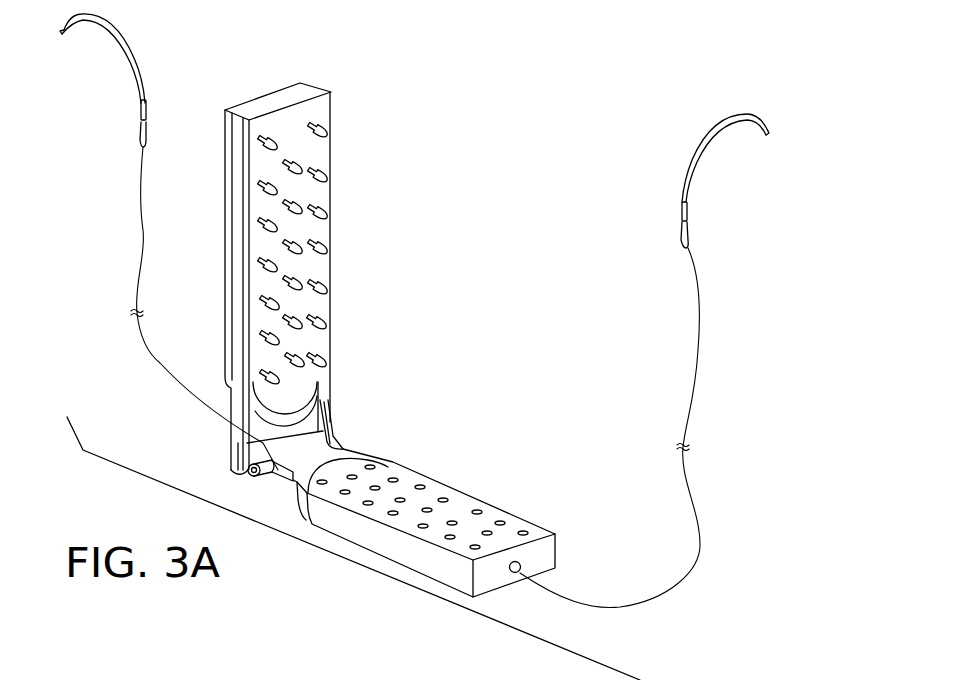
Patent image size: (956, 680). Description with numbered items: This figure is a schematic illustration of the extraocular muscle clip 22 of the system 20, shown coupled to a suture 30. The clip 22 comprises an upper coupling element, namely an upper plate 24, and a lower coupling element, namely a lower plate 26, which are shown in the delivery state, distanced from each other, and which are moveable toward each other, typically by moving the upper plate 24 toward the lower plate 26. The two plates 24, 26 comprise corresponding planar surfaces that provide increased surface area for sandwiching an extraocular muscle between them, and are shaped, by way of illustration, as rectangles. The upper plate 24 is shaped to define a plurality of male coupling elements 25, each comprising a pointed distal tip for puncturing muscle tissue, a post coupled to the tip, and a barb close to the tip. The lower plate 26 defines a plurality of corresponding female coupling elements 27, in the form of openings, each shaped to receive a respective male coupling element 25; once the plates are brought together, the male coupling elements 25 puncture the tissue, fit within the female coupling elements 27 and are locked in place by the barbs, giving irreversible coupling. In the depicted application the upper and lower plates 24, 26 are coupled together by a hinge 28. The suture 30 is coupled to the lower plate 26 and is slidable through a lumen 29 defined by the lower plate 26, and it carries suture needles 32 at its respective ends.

The system 20 is at (474, 211).
The extraocular muscle clip 22 is at (353, 548).
The upper plate 24 is at (258, 107).
The male coupling elements 25 is at (327, 178).
The lower plate 26 is at (536, 533).
The female coupling elements 27 is at (416, 488).
The hinge 28 is at (249, 471).
The lumen 29 is at (521, 585).
The suture 30 is at (143, 230).
The suture needles 32 is at (122, 45).